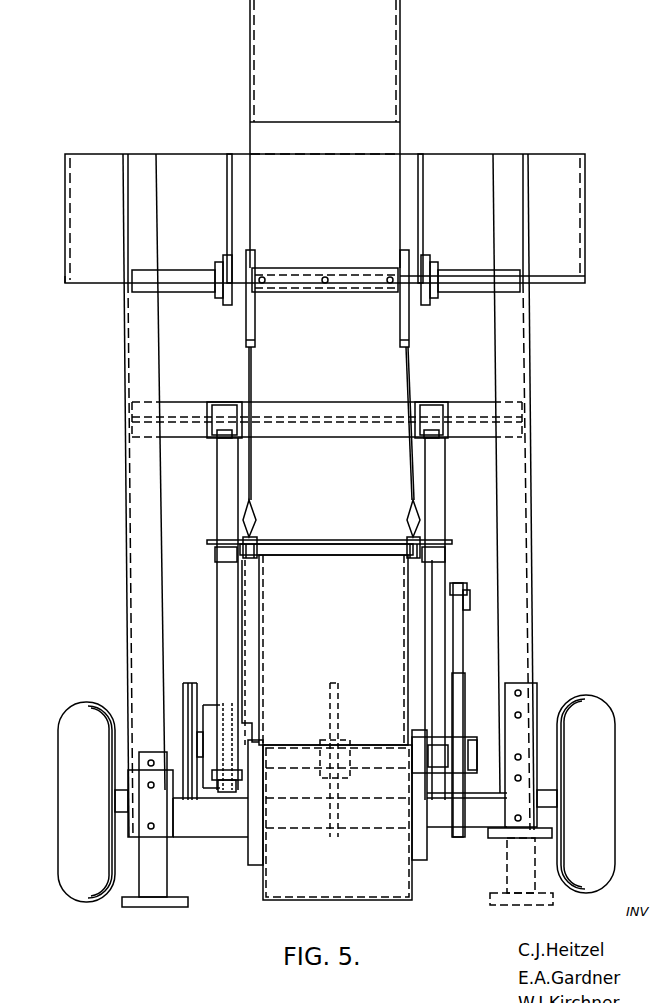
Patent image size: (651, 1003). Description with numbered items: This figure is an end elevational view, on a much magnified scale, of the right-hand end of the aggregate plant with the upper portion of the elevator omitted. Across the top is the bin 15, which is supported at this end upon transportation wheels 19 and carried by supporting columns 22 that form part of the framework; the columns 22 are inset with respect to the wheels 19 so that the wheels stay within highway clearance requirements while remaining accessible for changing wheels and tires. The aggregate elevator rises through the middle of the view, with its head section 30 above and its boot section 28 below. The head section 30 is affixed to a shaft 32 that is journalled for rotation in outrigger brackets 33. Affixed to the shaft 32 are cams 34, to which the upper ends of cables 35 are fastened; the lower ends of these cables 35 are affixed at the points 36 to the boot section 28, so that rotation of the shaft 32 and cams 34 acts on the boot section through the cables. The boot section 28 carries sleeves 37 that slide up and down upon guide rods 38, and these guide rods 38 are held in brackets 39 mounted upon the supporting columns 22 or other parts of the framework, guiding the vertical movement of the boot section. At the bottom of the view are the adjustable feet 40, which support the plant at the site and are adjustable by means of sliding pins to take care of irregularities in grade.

The bin 15 is at (585, 156).
The transportation wheels 19 is at (70, 790).
The supporting columns 22 is at (140, 630).
The boot section 28 is at (338, 640).
The head section 30 is at (250, 25).
The shaft 32 is at (325, 264).
The outrigger brackets 33 is at (232, 210).
The cams 34 is at (255, 340).
The cables 35 is at (250, 477).
The points 36 is at (283, 535).
The sleeves 37 is at (218, 553).
The guide rods 38 is at (435, 488).
The brackets 39 is at (222, 425).
The adjustable feet 40 is at (168, 907).